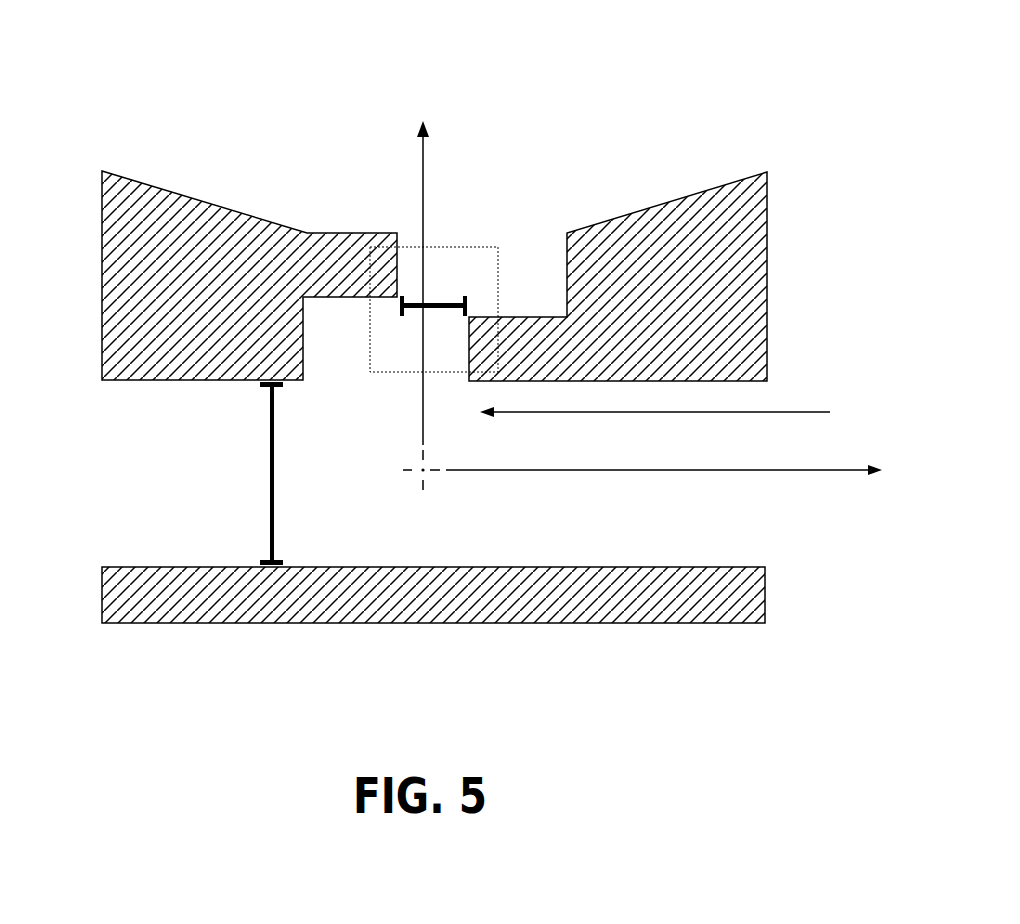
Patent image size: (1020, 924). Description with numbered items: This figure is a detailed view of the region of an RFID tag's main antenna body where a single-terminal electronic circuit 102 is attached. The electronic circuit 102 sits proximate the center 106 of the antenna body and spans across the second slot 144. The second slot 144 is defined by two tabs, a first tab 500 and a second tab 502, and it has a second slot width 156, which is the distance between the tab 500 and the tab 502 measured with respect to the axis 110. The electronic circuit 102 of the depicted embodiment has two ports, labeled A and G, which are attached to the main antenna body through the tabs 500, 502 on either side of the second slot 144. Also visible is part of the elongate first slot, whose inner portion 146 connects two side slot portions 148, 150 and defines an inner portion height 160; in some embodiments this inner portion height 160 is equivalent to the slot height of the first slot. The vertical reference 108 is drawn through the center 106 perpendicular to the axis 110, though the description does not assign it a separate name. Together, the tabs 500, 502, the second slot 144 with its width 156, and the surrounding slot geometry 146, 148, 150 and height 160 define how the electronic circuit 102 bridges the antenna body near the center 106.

The electronic circuit 102 is at (404, 327).
The center 106 is at (409, 490).
The vertical axis 108 is at (423, 172).
The axis 110 is at (800, 470).
The second slot 144 is at (465, 295).
The inner portion 146 is at (678, 415).
The side slot portion 148 is at (140, 518).
The side slot portion 150 is at (710, 522).
The second slot width 156 is at (443, 338).
The inner portion height 160 is at (268, 480).
The tab 500 is at (349, 255).
The tab 502 is at (520, 343).